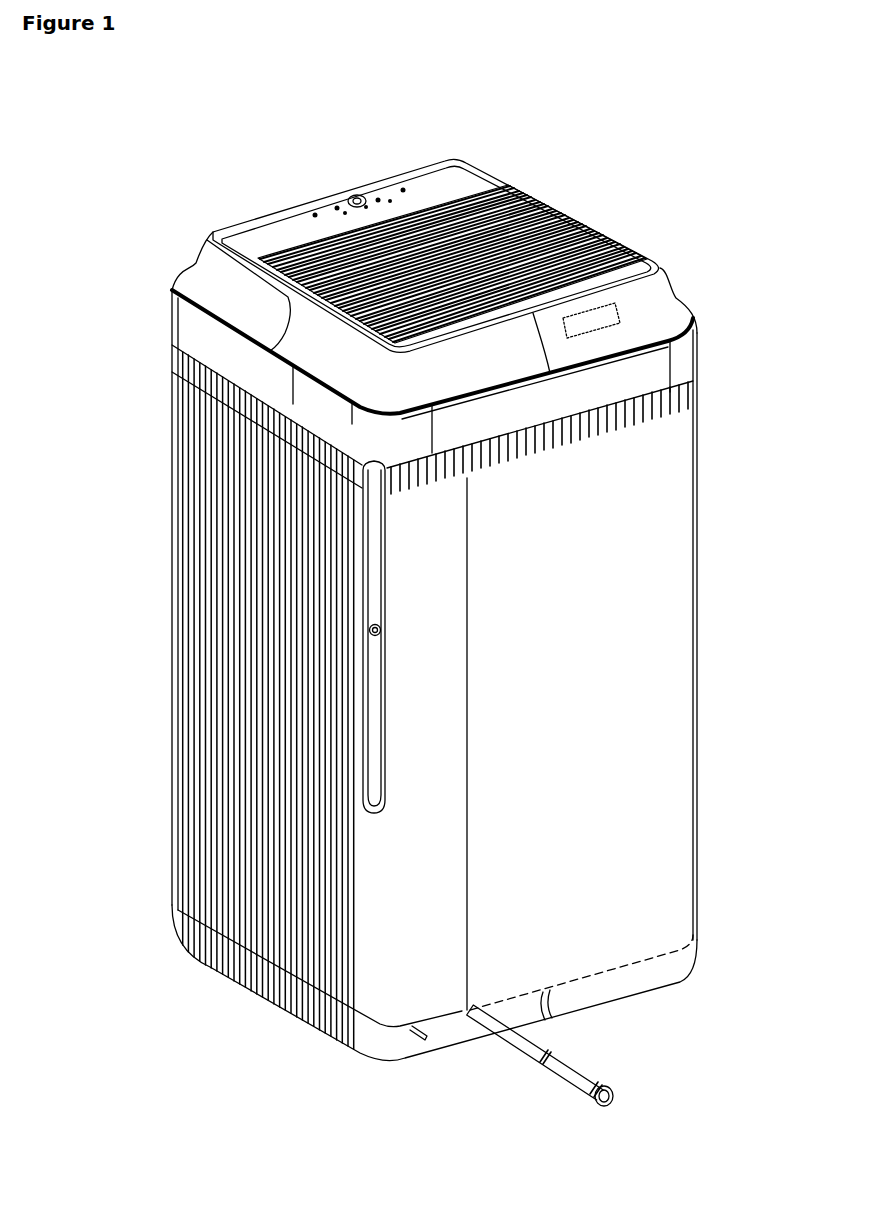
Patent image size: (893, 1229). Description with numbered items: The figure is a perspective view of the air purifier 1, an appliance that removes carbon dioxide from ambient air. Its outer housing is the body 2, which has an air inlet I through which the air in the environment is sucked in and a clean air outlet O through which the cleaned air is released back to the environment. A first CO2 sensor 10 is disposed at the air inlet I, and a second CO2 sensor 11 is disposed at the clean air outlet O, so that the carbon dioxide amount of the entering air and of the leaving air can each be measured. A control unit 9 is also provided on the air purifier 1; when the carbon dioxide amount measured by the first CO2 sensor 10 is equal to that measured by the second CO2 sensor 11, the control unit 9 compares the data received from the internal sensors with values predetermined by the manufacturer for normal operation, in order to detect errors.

The air purifier 1 is at (711, 101).
The body 2 is at (678, 610).
The control unit 9 is at (353, 200).
The first CO2 sensor 10 is at (380, 627).
The second CO2 sensor 11 is at (618, 313).
The clean air outlet O is at (518, 220).
The air inlet I is at (382, 643).